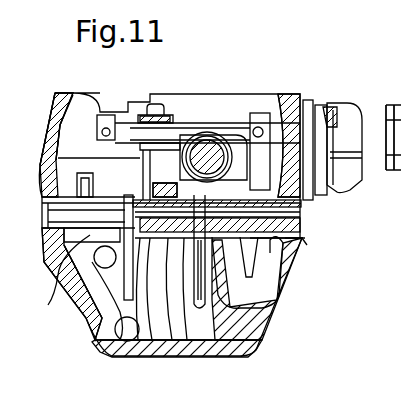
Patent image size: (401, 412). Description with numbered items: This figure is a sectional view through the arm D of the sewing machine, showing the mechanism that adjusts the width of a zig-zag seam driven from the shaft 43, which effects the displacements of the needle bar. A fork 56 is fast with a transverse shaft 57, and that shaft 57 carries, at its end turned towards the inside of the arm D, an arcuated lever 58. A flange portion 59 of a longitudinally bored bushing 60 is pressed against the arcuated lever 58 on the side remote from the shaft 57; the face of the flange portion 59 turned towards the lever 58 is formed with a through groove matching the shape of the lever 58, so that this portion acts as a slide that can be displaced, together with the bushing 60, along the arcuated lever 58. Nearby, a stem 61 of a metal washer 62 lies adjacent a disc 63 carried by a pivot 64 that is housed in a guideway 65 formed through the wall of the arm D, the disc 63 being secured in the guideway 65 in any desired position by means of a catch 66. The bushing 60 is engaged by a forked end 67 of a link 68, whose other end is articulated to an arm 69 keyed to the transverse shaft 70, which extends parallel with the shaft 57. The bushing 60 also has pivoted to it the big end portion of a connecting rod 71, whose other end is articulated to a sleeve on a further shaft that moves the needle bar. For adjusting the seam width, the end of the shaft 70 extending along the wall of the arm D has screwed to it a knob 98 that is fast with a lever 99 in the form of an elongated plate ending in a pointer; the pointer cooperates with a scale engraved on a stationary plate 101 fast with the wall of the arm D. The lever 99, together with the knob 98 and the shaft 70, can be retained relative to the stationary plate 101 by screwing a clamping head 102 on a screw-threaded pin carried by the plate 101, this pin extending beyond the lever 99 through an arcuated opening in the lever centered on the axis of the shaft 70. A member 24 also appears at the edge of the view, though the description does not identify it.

The arm D is at (52, 108).
The link 68 is at (70, 135).
The catch 66 is at (80, 185).
The guideway 65 is at (40, 207).
The pivot 64 is at (87, 218).
The stem 61 is at (143, 238).
The disc 63 is at (78, 340).
The forked end 67 is at (100, 357).
The connecting rod 71 is at (143, 357).
The bushing 60 is at (168, 340).
The flange portion 59 is at (183, 307).
The arcuated lever 58 is at (200, 292).
The fork 56 is at (250, 253).
The transverse shaft 57 is at (307, 245).
The metal washer 62 is at (141, 171).
The arm 69 is at (172, 112).
The shaft 43 is at (203, 155).
The transverse shaft 70 is at (225, 127).
The stationary plate 101 is at (310, 108).
The lever 99 is at (327, 107).
The knob 98 is at (357, 187).
The clamping head 102 is at (335, 197).
The member 24 is at (392, 117).